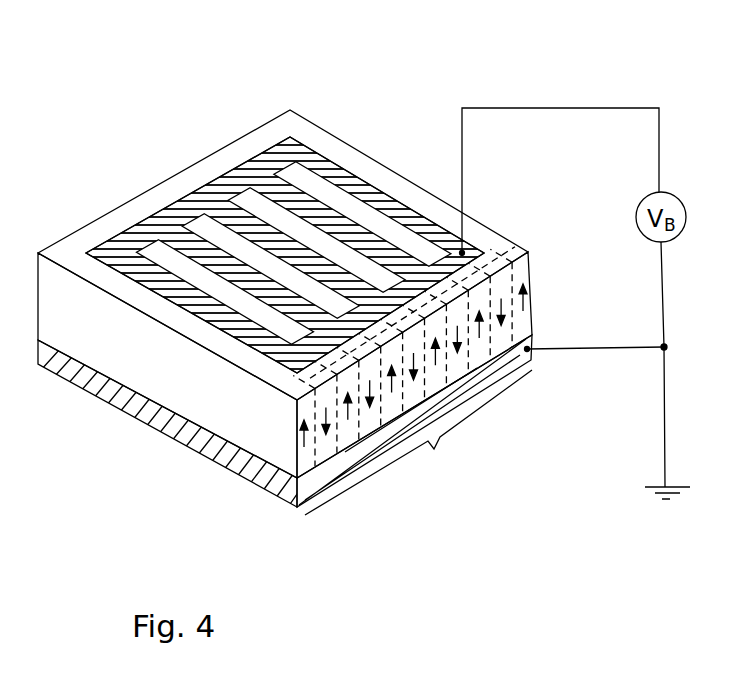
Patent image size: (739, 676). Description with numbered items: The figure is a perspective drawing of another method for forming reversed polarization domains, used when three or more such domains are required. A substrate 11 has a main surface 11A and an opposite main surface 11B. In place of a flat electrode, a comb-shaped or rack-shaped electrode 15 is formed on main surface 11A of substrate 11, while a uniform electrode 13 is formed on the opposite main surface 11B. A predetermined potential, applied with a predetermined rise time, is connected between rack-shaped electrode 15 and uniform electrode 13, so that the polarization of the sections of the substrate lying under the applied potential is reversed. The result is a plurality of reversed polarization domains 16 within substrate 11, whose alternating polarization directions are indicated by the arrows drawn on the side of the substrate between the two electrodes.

The substrate 11 is at (314, 308).
The main surface 11A is at (110, 220).
The opposite main surface 11B is at (350, 453).
The uniform electrode 13 is at (530, 358).
The comb-shaped or rack-shaped electrode 15 is at (298, 145).
The reversed polarization domains 16 is at (418, 442).